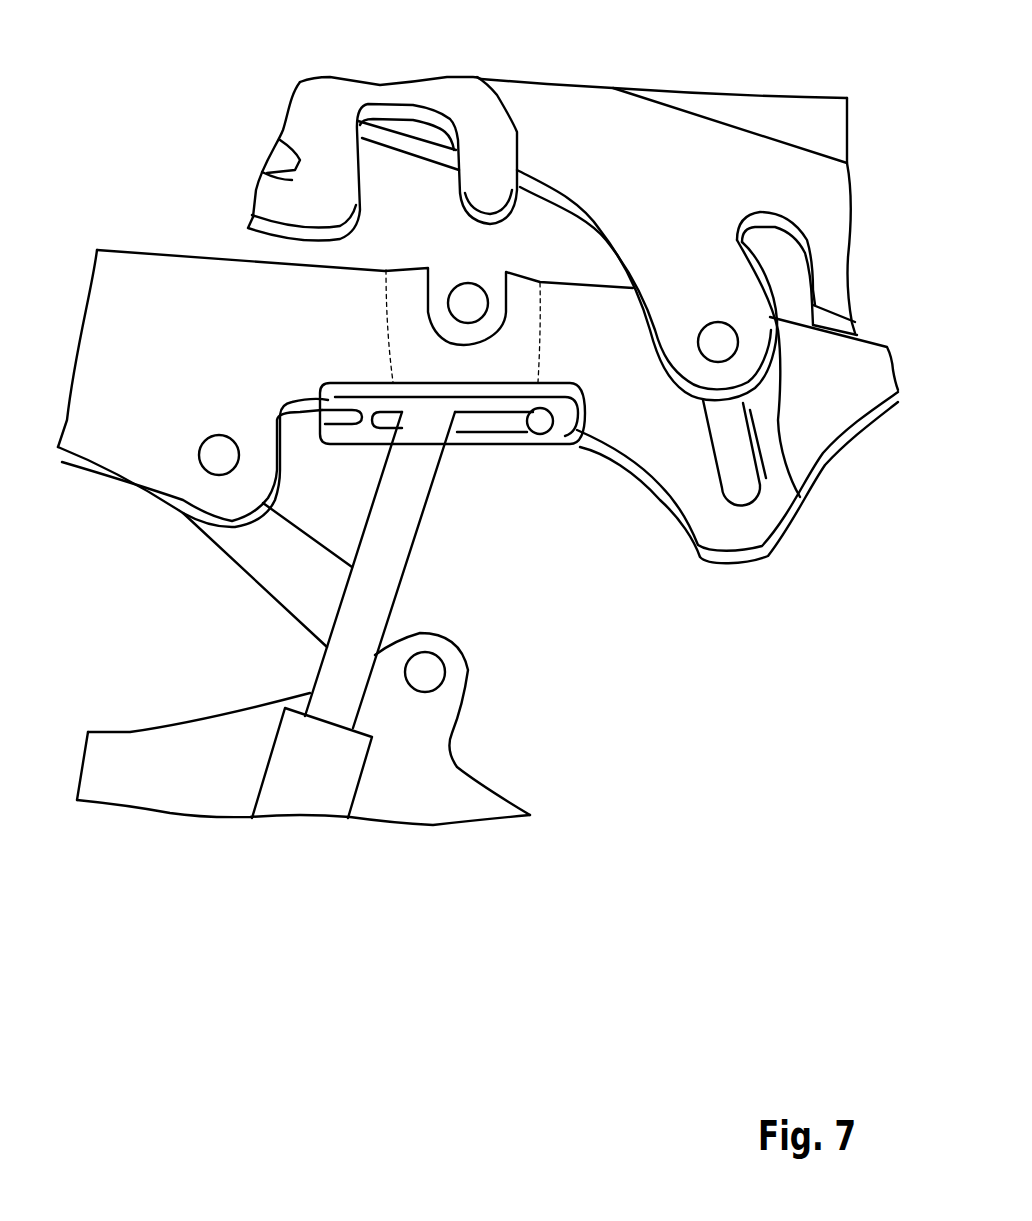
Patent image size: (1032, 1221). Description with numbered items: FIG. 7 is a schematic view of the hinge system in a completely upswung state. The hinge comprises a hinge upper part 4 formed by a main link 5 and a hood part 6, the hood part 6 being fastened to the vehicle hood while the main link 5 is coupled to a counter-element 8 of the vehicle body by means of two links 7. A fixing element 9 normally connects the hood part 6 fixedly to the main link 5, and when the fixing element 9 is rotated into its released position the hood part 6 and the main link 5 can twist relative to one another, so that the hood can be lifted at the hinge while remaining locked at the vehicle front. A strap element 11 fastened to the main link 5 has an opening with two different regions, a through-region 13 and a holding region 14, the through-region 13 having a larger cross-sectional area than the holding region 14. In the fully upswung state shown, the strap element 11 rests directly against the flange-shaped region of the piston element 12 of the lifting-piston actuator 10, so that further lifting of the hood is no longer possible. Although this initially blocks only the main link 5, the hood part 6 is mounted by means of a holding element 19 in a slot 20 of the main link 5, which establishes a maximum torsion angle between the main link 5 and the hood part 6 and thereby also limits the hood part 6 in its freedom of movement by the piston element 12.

The hinge upper part 4 is at (116, 163).
The main link 5 is at (815, 407).
The hood part 6 is at (826, 194).
The links 7 is at (255, 557).
The counter-element 8 is at (427, 787).
The fixing element 9 is at (265, 174).
The lifting-piston actuator 10 is at (305, 813).
The strap element 11 is at (565, 427).
The piston element 12 is at (393, 553).
The through-region 13 is at (535, 438).
The holding region 14 is at (467, 426).
The holding element 19 is at (718, 342).
The slot 20 is at (740, 473).